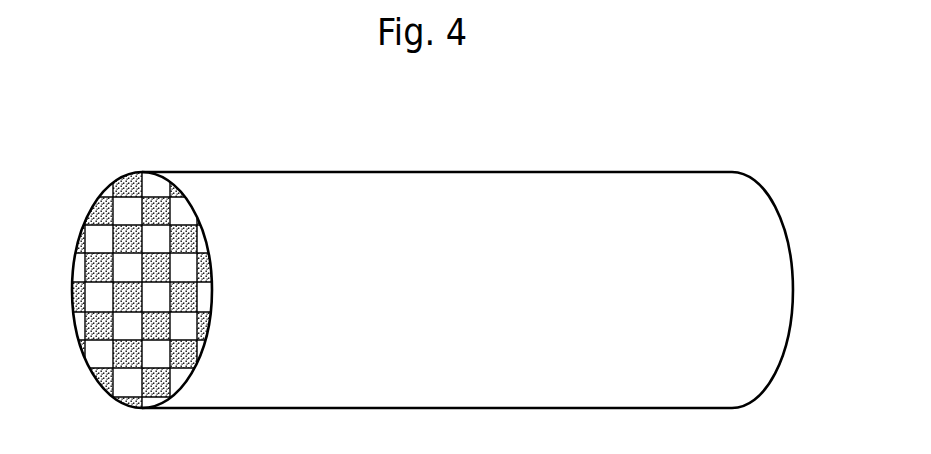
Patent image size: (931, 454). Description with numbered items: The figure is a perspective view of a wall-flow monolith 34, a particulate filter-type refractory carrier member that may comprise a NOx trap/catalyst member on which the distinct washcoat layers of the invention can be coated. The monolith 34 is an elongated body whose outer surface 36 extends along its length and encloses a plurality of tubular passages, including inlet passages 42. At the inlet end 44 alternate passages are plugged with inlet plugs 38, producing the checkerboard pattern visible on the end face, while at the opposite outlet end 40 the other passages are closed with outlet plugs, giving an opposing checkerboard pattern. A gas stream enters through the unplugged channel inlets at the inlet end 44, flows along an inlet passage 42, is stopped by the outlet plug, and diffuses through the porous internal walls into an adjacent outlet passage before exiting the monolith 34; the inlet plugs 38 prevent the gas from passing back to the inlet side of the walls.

The wall-flow monolith 34 is at (352, 130).
The outer surface 36 is at (613, 183).
The inlet plugs 38 is at (73, 287).
The outlet end 40 is at (782, 222).
The inlet passage 42 is at (88, 238).
The inlet end 44 is at (213, 297).